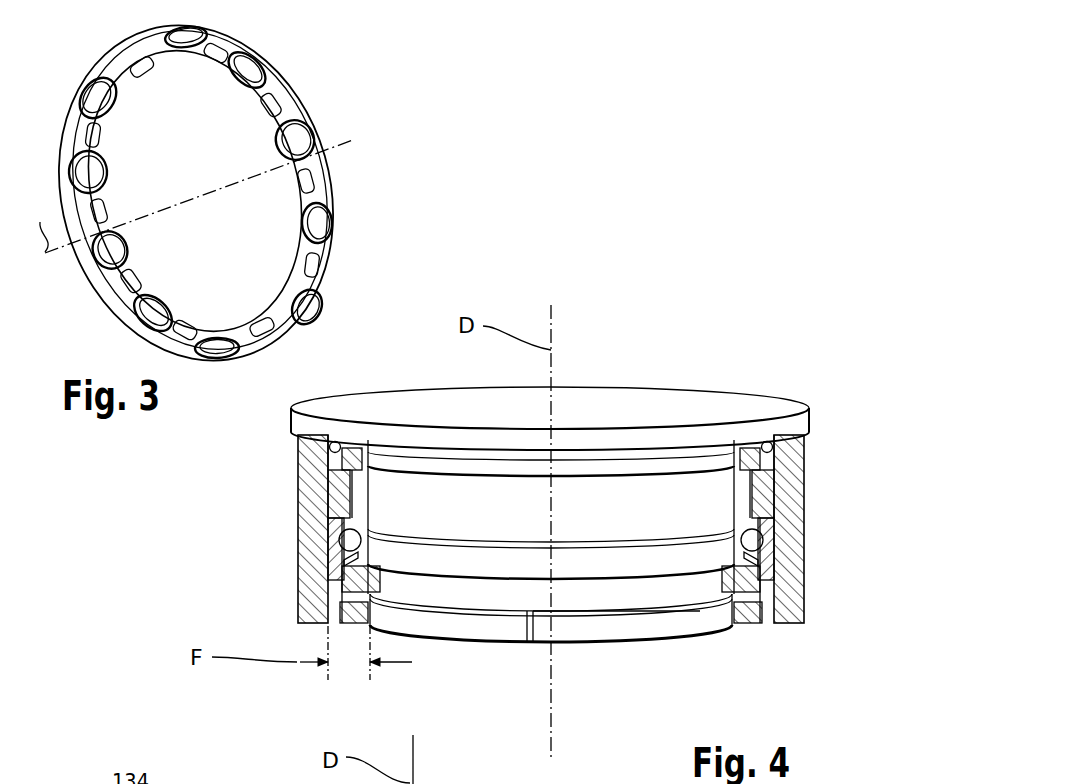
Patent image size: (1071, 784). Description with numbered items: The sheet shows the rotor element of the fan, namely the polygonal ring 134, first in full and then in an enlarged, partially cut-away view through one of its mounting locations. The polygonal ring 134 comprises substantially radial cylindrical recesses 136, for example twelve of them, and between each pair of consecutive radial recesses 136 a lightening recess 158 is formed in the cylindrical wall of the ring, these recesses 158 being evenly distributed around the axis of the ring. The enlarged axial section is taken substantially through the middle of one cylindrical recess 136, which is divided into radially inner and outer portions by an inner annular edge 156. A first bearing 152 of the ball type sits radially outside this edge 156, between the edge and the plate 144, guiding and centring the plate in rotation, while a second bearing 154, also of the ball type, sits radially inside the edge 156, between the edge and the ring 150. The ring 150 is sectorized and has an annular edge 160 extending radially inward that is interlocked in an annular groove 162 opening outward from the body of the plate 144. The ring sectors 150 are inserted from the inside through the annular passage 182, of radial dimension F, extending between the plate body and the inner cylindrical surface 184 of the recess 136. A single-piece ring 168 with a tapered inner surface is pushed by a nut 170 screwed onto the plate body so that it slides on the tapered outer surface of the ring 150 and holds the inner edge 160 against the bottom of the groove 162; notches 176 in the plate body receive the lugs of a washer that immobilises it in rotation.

In FIG. 3, the polygonal ring 134 is at (418, 140).
In FIG. 4, the polygonal ring 134 is at (297, 521).
In FIG. 3, the radial cylindrical recess 136 is at (310, 143).
In FIG. 4, the radial cylindrical recess 136 is at (750, 492).
In FIG. 3, the recess 158 is at (300, 103).
In FIG. 4, the plate 144 is at (635, 385).
In FIG. 4, the first bearing 152 is at (328, 452).
In FIG. 4, the inner annular edge 156 is at (340, 490).
In FIG. 4, the second bearing 154 is at (337, 531).
In FIG. 4, the single-piece ring 168 is at (340, 584).
In FIG. 4, the annular passage 182 is at (770, 556).
In FIG. 4, the inner cylindrical surface 184 is at (768, 580).
In FIG. 4, the nut 170 is at (763, 640).
In FIG. 4, the annular edge 160 is at (722, 584).
In FIG. 4, the annular groove 162 is at (600, 588).
In FIG. 4, the ring 150 is at (732, 592).
In FIG. 4, the notches 176 is at (530, 642).